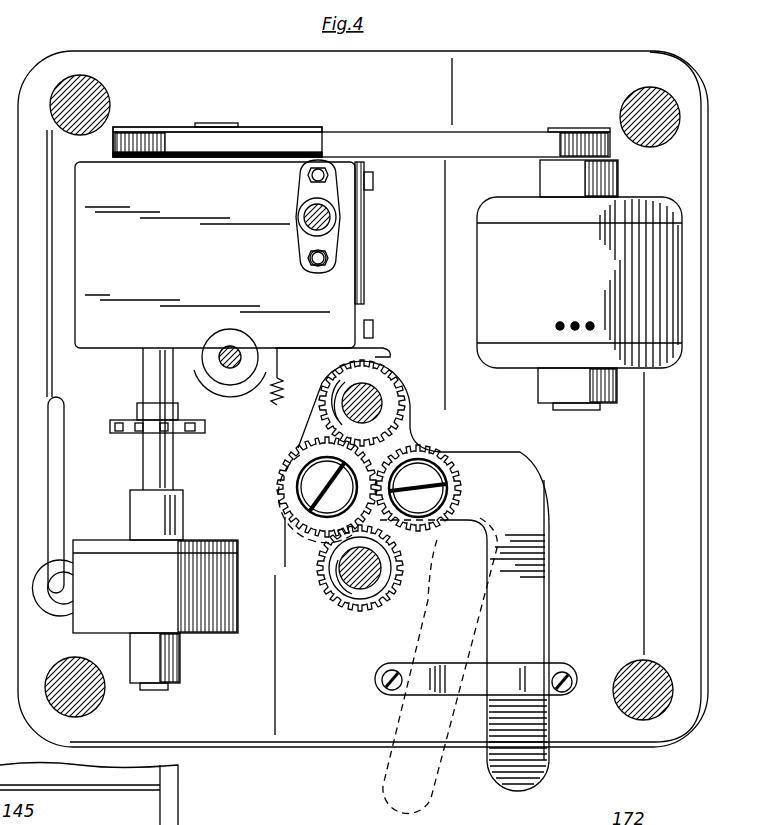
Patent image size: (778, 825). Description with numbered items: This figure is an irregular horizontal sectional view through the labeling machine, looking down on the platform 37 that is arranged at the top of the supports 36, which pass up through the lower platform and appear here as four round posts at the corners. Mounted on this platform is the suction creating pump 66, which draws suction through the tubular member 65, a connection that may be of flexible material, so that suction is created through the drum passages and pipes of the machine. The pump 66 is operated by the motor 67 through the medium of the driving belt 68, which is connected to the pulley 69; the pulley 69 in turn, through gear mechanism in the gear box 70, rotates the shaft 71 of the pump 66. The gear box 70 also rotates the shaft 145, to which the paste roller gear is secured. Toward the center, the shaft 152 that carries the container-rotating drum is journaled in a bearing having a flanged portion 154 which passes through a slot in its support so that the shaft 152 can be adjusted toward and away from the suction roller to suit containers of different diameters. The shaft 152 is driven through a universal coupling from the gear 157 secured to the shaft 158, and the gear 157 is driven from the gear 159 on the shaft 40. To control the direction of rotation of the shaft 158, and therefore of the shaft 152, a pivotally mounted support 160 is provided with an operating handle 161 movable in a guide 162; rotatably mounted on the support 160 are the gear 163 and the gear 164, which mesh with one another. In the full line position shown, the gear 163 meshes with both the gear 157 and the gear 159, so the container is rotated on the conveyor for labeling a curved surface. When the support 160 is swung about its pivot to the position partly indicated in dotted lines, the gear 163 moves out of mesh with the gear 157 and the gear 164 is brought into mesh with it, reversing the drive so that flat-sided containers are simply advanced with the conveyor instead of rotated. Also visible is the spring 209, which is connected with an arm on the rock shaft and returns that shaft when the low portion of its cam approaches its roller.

The supports 36 is at (100, 100).
The platform 37 is at (701, 226).
The shaft 40 is at (382, 402).
The tubular member 65 is at (58, 488).
The suction creating pump 66 is at (155, 615).
The motor 67 is at (579, 303).
The driving belt 68 is at (420, 137).
The pulley 69 is at (283, 128).
The gear box 70 is at (232, 259).
The shaft 71 is at (160, 476).
The shaft 145 is at (222, 349).
The shaft 152 is at (300, 210).
The flanged portion 154 is at (310, 250).
The gear 157 is at (332, 600).
The shaft 158 is at (356, 595).
The gear 159 is at (322, 402).
The pivotally mounted support 160 is at (400, 441).
The operating handle 161 is at (424, 790).
The guide 162 is at (498, 668).
The gear 163 is at (278, 490).
The gear 164 is at (478, 488).
The spring 209 is at (262, 394).